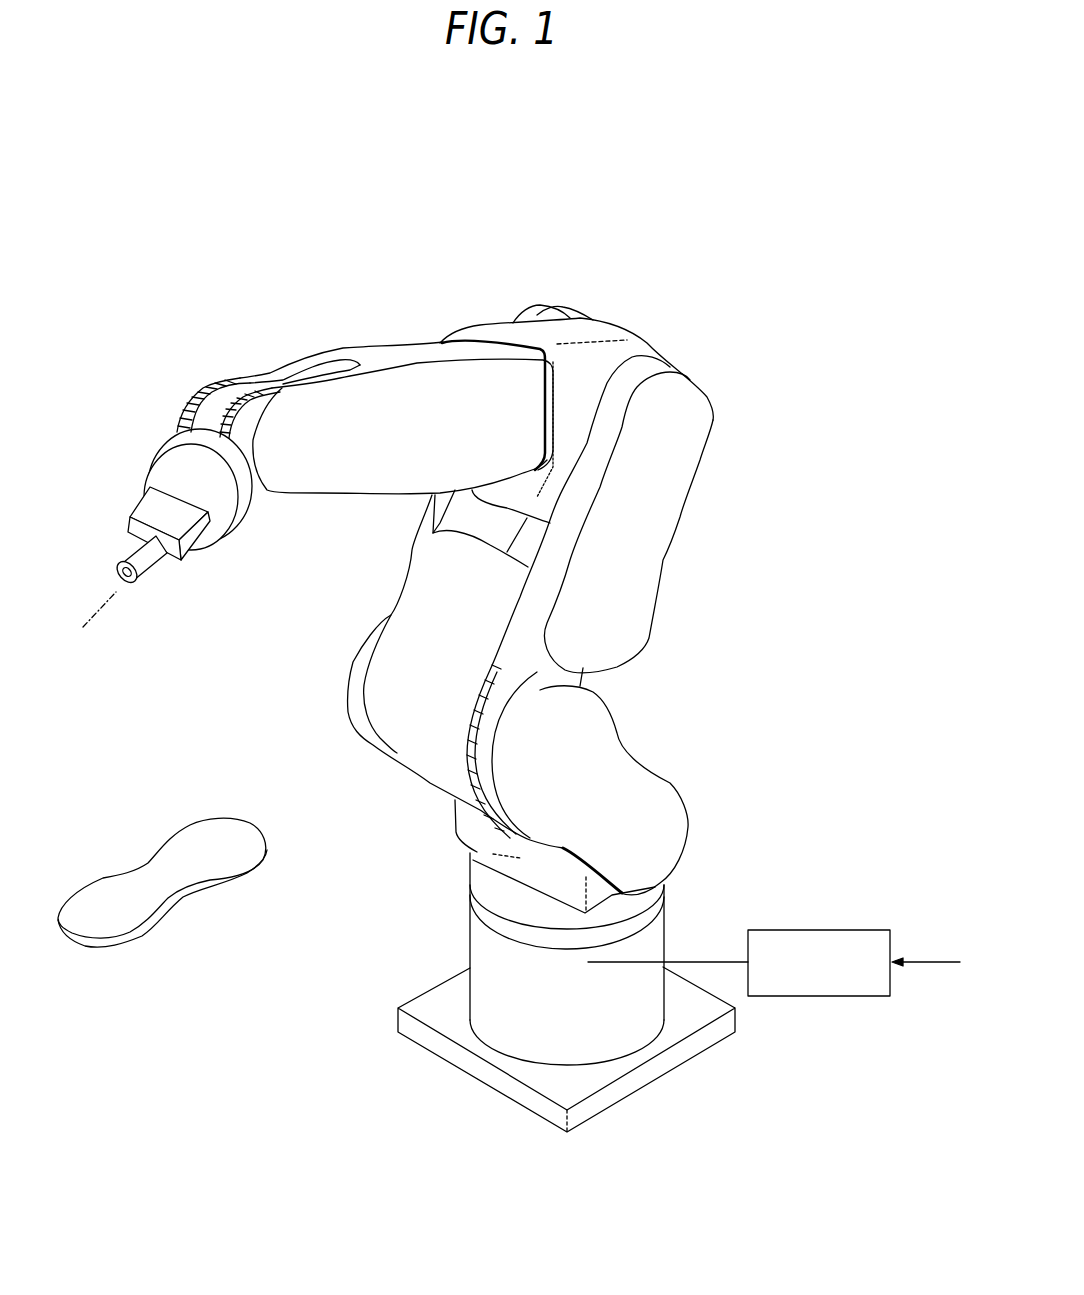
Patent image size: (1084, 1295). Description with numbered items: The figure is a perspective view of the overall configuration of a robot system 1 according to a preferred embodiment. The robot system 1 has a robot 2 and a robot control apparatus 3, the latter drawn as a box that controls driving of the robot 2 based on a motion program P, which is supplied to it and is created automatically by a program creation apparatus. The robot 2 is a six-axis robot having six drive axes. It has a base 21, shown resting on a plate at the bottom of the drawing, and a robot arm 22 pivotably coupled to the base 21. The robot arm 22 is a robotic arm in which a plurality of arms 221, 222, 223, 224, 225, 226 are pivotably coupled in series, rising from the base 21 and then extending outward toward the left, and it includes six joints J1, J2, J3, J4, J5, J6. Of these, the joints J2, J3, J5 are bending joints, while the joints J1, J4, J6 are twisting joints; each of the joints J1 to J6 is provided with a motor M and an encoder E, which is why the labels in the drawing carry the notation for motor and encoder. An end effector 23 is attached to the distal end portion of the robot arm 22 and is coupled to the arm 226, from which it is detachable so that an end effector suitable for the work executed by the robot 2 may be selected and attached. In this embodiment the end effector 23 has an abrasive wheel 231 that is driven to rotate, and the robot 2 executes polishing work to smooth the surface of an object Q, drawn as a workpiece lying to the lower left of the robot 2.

The robot system 1 is at (660, 172).
The robot 2 is at (599, 310).
The robot control apparatus 3 is at (818, 975).
The base 21 is at (523, 1013).
The robot arm 22 is at (660, 630).
The arm 221 is at (650, 833).
The arm 222 is at (630, 543).
The arm 223 is at (586, 365).
The arm 224 is at (523, 410).
The arm 225 is at (235, 364).
The arm 226 is at (184, 499).
The end effector 23 is at (142, 567).
The abrasive wheel 231 is at (133, 560).
The joint J1 is at (477, 853).
The joint J2 is at (412, 710).
The joint J3 is at (673, 420).
The joint J4 is at (490, 363).
The joint J5 is at (288, 445).
The joint J6 is at (193, 465).
The motion program P is at (926, 949).
The object Q is at (135, 903).